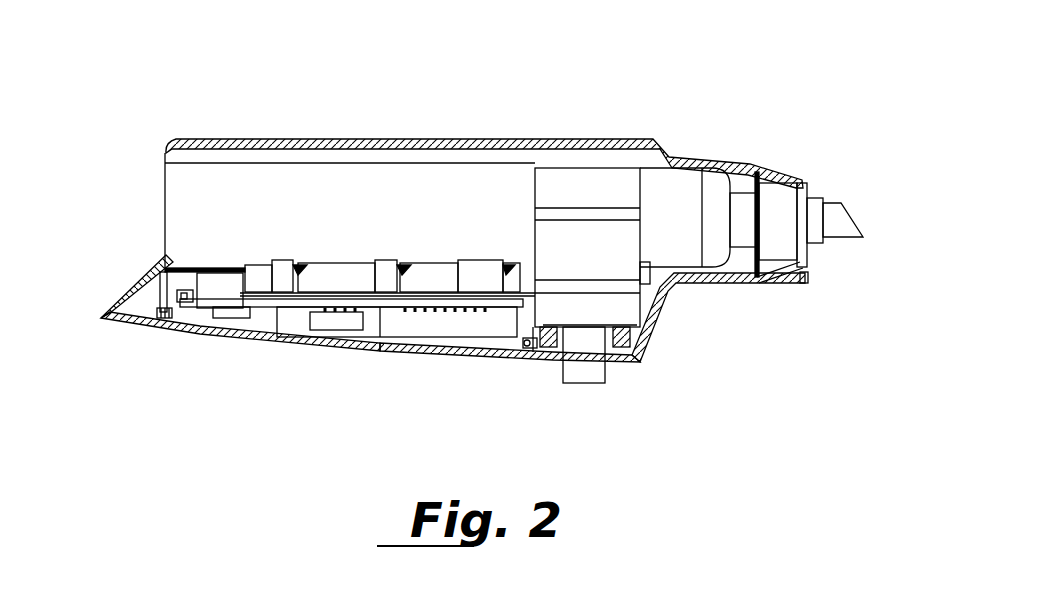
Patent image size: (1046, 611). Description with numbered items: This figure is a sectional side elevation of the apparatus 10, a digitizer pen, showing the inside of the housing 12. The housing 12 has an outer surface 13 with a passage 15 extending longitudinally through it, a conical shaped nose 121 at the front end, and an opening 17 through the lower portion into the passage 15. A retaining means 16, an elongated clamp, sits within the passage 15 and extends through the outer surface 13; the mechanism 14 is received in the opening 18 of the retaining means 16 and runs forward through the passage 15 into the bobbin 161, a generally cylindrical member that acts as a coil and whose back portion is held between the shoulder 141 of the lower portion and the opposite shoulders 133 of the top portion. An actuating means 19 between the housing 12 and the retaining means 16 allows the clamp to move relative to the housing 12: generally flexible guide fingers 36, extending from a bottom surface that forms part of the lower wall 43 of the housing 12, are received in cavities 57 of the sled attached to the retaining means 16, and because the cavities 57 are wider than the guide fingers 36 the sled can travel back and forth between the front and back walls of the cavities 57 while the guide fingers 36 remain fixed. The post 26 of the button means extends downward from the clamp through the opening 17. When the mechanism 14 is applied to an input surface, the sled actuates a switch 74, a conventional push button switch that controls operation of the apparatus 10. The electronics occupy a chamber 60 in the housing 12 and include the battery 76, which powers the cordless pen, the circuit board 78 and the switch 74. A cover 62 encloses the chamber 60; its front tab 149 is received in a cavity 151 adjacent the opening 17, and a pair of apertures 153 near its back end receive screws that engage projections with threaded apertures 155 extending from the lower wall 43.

The apparatus 10 is at (197, 82).
The housing 12 is at (724, 302).
The outer surface 13 is at (516, 140).
The mechanism 14 is at (718, 250).
The passage 15 is at (405, 150).
The retaining means 16 is at (600, 185).
The opening 17 is at (618, 358).
The opening 18 is at (217, 282).
The actuating means 19 is at (248, 252).
The post 26 is at (587, 373).
The guide fingers 36 is at (282, 260).
The lower wall 43 is at (182, 268).
The cavities 57 is at (299, 267).
The chamber 60 is at (247, 321).
The cover 62 is at (306, 350).
The switch 74 is at (188, 321).
The battery 76 is at (483, 324).
The circuit board 78 is at (381, 322).
The conical shaped nose 121 is at (777, 168).
The shoulders 133 is at (757, 178).
The shoulder 141 is at (808, 279).
The front tab 149 is at (562, 341).
The cavity 151 is at (540, 330).
The apertures 153 is at (163, 330).
The threaded apertures 155 is at (146, 292).
The bobbin 161 is at (781, 216).